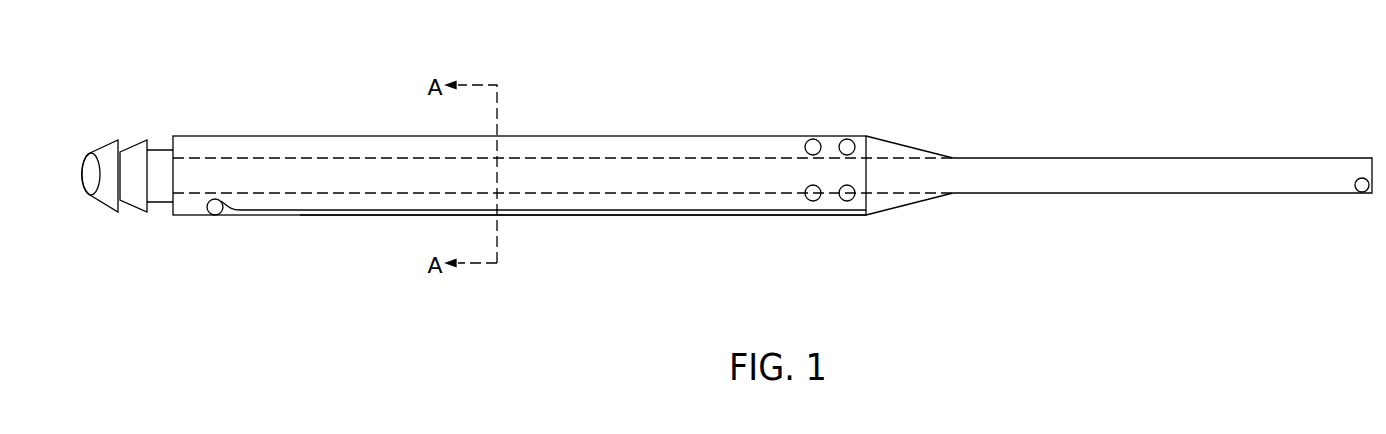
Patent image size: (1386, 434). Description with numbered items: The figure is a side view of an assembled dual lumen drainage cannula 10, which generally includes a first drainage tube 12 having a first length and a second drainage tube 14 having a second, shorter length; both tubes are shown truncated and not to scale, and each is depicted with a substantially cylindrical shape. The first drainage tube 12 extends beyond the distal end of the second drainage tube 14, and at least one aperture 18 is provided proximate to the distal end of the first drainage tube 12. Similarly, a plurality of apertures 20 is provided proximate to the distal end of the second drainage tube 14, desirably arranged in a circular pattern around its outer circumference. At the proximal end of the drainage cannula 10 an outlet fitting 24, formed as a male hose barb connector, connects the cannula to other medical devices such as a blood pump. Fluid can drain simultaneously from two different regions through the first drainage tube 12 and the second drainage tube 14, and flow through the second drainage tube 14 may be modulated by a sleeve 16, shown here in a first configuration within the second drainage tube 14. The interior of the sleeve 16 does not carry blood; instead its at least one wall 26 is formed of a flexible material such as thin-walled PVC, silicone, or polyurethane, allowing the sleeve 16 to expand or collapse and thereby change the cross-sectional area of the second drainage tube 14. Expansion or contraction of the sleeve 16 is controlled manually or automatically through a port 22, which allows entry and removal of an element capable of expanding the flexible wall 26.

The dual lumen drainage cannula 10 is at (770, 68).
The first drainage tube 12 is at (572, 193).
The second drainage tube 14 is at (626, 136).
The sleeve 16 is at (362, 213).
The aperture 18 is at (1362, 193).
The apertures 20 is at (847, 139).
The port 22 is at (215, 215).
The outlet fitting 24 is at (140, 126).
The wall 26 is at (282, 213).